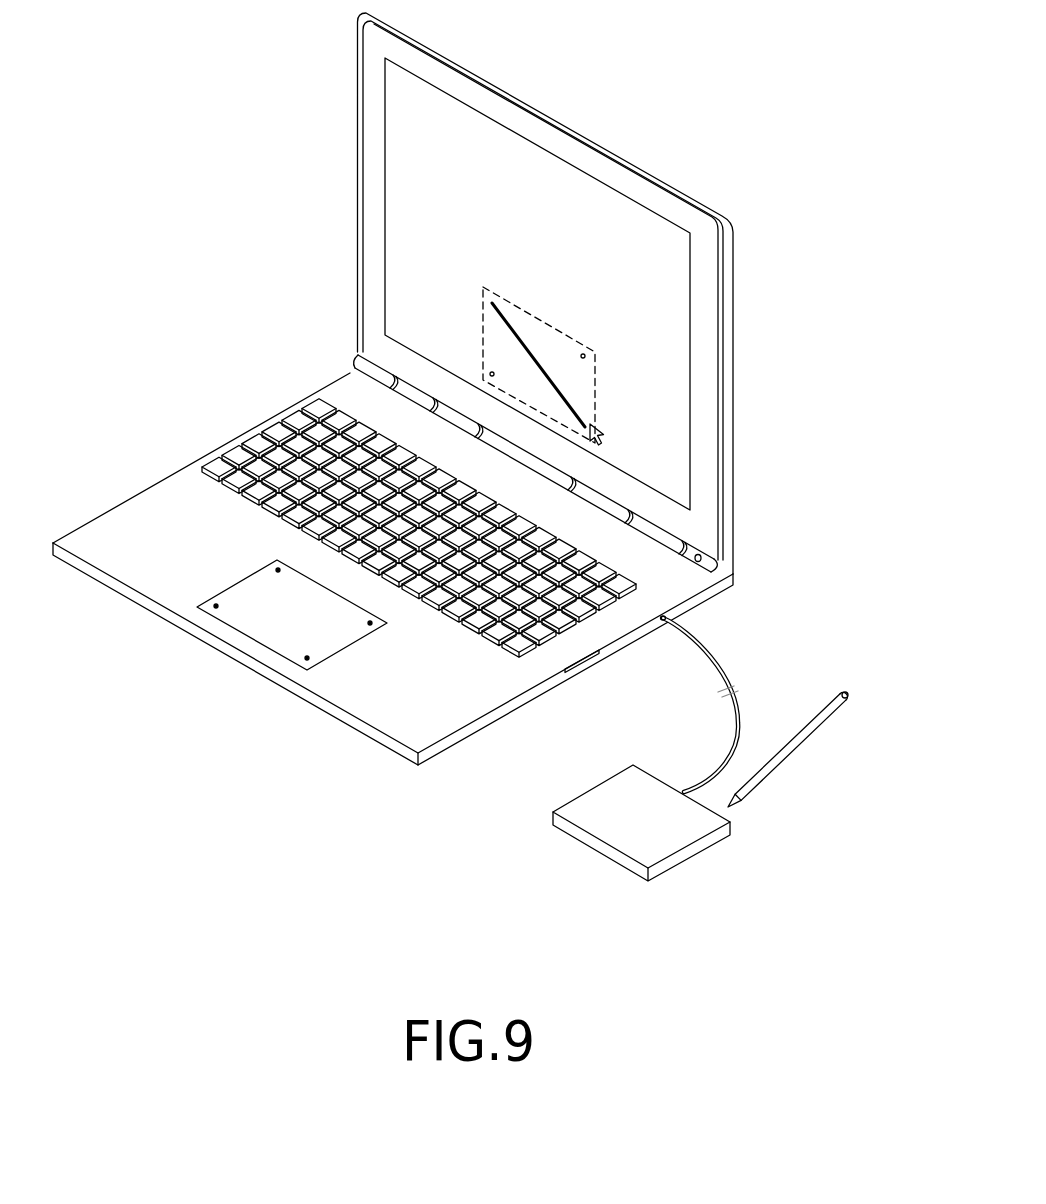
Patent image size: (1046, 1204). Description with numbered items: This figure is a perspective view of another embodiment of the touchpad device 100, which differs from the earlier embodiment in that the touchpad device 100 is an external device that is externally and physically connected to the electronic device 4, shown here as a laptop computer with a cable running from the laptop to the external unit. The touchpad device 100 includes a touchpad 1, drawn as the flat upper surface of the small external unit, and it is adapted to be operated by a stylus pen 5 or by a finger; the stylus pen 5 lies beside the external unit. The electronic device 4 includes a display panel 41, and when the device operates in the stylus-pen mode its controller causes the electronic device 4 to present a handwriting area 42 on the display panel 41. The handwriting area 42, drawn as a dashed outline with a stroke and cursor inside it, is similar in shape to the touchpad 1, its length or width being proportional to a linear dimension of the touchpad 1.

The electronic device 4 is at (432, 389).
The display panel 41 is at (675, 355).
The handwriting area 42 is at (482, 338).
The touchpad device 100 is at (675, 855).
The touchpad 1 is at (608, 838).
The stylus pen 5 is at (792, 755).